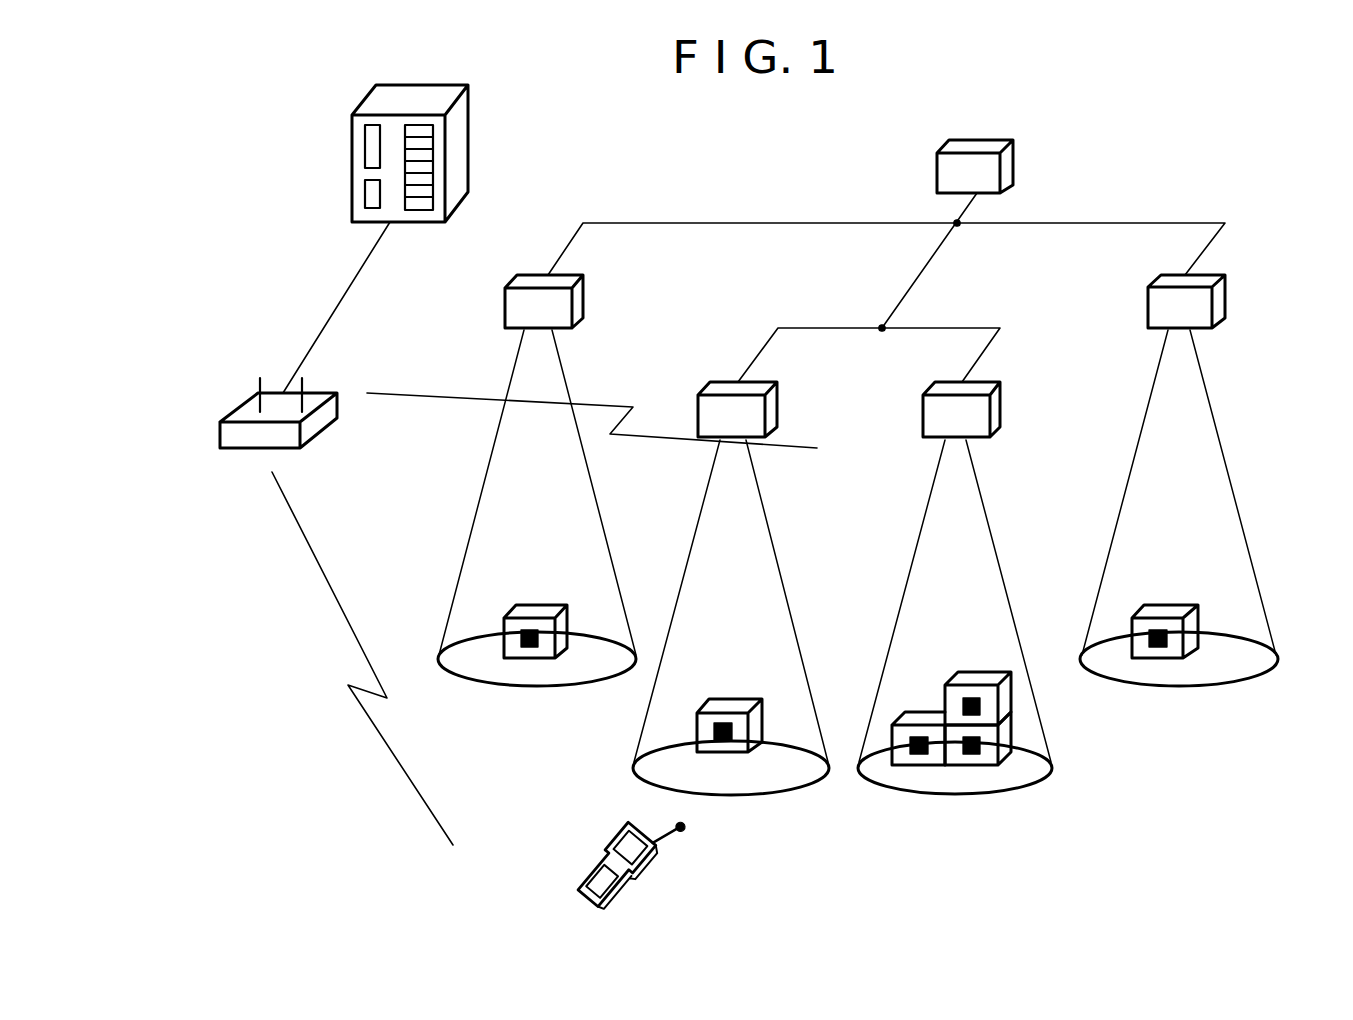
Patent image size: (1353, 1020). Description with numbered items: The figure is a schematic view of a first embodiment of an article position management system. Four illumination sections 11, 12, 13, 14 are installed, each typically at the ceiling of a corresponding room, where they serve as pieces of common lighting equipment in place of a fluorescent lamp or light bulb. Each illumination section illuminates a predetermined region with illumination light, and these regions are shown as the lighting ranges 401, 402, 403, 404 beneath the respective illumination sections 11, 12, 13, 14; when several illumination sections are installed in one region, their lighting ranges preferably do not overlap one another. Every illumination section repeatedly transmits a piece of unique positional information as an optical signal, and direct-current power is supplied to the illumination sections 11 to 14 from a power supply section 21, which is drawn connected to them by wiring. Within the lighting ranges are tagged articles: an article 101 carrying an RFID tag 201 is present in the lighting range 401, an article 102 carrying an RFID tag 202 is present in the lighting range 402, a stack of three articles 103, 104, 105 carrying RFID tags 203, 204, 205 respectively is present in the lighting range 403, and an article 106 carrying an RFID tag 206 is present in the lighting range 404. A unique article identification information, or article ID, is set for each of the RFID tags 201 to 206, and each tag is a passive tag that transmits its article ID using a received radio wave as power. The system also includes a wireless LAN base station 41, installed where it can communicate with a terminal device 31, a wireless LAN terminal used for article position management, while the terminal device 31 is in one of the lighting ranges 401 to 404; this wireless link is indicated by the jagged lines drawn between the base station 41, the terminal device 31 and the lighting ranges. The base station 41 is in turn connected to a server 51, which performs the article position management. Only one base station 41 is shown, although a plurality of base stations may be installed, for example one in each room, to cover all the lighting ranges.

The illumination section 11 is at (522, 275).
The illumination section 12 is at (722, 382).
The illumination section 13 is at (987, 380).
The illumination section 14 is at (1148, 306).
The power supply section 21 is at (937, 170).
The terminal device 31 is at (622, 836).
The wireless LAN base station 41 is at (308, 394).
The server 51 is at (352, 158).
The article 101 is at (540, 605).
The article 102 is at (735, 699).
The article 103 is at (925, 712).
The article 104 is at (972, 672).
The article 105 is at (1013, 735).
The article 106 is at (1168, 605).
The RFID tag 201 is at (528, 648).
The RFID tag 202 is at (722, 742).
The RFID tag 203 is at (917, 755).
The RFID tag 204 is at (980, 706).
The RFID tag 205 is at (972, 755).
The RFID tag 206 is at (1160, 647).
The lighting range 401 is at (497, 481).
The lighting range 402 is at (713, 511).
The lighting range 403 is at (915, 562).
The lighting range 404 is at (1130, 494).